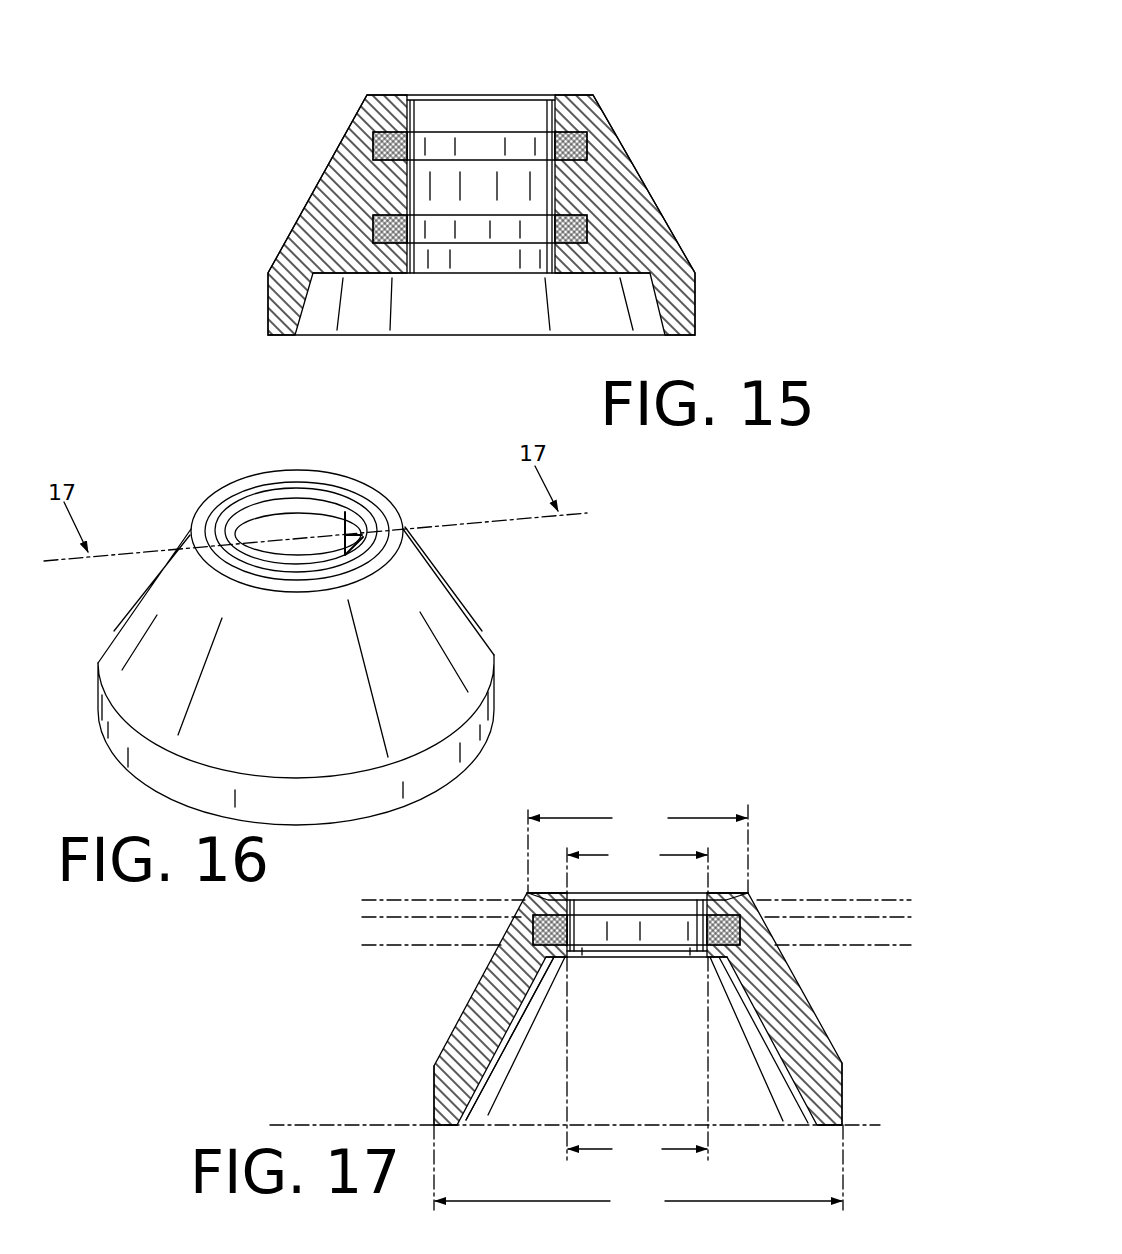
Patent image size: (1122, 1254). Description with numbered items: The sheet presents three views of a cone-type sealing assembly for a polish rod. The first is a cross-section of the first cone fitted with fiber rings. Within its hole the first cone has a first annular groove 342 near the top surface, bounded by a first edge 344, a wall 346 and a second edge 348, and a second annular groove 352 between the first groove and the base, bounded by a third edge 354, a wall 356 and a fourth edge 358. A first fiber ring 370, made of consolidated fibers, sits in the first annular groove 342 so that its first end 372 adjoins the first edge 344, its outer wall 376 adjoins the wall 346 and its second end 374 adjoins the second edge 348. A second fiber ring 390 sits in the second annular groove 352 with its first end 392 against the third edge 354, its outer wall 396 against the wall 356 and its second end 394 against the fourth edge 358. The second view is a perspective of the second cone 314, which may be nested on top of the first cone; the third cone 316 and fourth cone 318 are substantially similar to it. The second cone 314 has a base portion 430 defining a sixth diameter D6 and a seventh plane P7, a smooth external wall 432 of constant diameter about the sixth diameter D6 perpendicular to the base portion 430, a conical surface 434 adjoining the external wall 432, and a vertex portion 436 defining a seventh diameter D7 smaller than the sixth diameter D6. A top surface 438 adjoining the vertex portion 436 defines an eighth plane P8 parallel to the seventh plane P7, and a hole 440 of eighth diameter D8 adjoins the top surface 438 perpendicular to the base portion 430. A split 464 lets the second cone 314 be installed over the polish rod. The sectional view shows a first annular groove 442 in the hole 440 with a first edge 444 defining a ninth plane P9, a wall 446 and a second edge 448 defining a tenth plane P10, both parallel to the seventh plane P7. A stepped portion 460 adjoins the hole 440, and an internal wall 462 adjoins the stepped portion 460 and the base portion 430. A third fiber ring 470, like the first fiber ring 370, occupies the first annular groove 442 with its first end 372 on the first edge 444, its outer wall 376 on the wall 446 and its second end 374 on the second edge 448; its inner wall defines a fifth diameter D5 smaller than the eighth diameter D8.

In FIG. 16, the second cone 314 is at (410, 645).
In FIG. 17, the second cone 314 is at (607, 948).
In FIG. 16, the third cone 316 is at (410, 645).
In FIG. 17, the third cone 316 is at (607, 948).
In FIG. 16, the fourth cone 318 is at (410, 645).
In FIG. 17, the fourth cone 318 is at (607, 948).
In FIG. 15, the first annular groove 342 is at (434, 126).
In FIG. 15, the first edge 344 is at (473, 130).
In FIG. 15, the wall 346 is at (385, 147).
In FIG. 15, the second edge 348 is at (529, 162).
In FIG. 15, the second annular groove 352 is at (440, 252).
In FIG. 15, the third edge 354 is at (440, 212).
In FIG. 15, the wall 356 is at (378, 229).
In FIG. 15, the fourth edge 358 is at (448, 246).
In FIG. 15, the first fiber ring 370 is at (500, 142).
In FIG. 15, the first end 372 is at (505, 75).
In FIG. 17, the first end 372 is at (680, 917).
In FIG. 15, the second end 374 is at (645, 158).
In FIG. 17, the second end 374 is at (626, 947).
In FIG. 15, the outer wall 376 is at (296, 115).
In FIG. 17, the outer wall 376 is at (533, 940).
In FIG. 15, the second fiber ring 390 is at (494, 233).
In FIG. 15, the first end 392 is at (370, 183).
In FIG. 15, the second end 394 is at (517, 291).
In FIG. 15, the outer wall 396 is at (286, 231).
In FIG. 16, the base portion 430 is at (465, 778).
In FIG. 17, the base portion 430 is at (447, 1126).
In FIG. 16, the external wall 432 is at (340, 790).
In FIG. 17, the external wall 432 is at (432, 1101).
In FIG. 16, the conical surface 434 is at (356, 701).
In FIG. 17, the conical surface 434 is at (509, 954).
In FIG. 16, the vertex portion 436 is at (378, 541).
In FIG. 17, the vertex portion 436 is at (528, 895).
In FIG. 16, the top surface 438 is at (225, 541).
In FIG. 17, the top surface 438 is at (716, 900).
In FIG. 17, the hole 440 is at (587, 908).
In FIG. 16, the first annular groove 442 is at (273, 525).
In FIG. 17, the first annular groove 442 is at (578, 913).
In FIG. 16, the first edge 444 is at (286, 511).
In FIG. 16, the wall 446 is at (313, 512).
In FIG. 17, the wall 446 is at (533, 915).
In FIG. 16, the second edge 448 is at (255, 527).
In FIG. 17, the second edge 448 is at (592, 961).
In FIG. 16, the stepped portion 460 is at (265, 548).
In FIG. 17, the stepped portion 460 is at (721, 967).
In FIG. 17, the internal wall 462 is at (556, 1099).
In FIG. 16, the split 464 is at (346, 512).
In FIG. 17, the third fiber ring 470 is at (659, 932).
In FIG. 17, the seventh plane P7 is at (297, 1123).
In FIG. 17, the eighth plane P8 is at (386, 899).
In FIG. 17, the ninth plane P9 is at (386, 918).
In FIG. 17, the tenth plane P10 is at (383, 945).
In FIG. 17, the fifth diameter D5 is at (637, 1151).
In FIG. 17, the sixth diameter D6 is at (638, 1205).
In FIG. 17, the seventh diameter D7 is at (638, 819).
In FIG. 17, the eighth diameter D8 is at (637, 855).